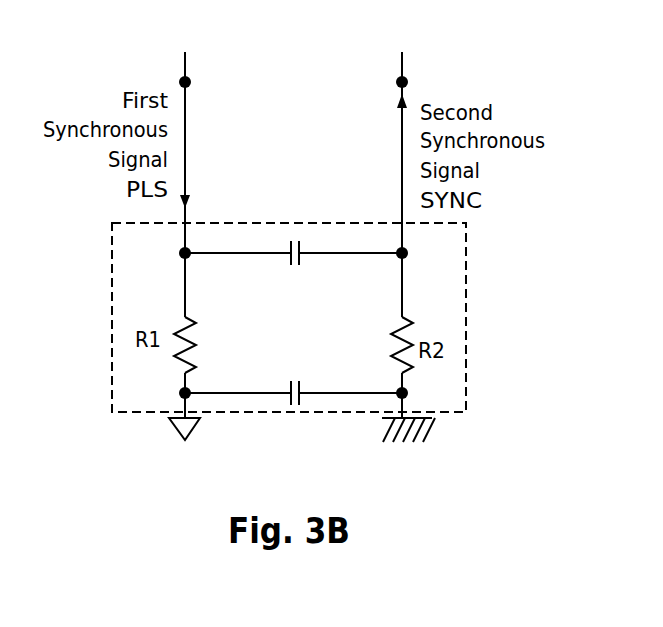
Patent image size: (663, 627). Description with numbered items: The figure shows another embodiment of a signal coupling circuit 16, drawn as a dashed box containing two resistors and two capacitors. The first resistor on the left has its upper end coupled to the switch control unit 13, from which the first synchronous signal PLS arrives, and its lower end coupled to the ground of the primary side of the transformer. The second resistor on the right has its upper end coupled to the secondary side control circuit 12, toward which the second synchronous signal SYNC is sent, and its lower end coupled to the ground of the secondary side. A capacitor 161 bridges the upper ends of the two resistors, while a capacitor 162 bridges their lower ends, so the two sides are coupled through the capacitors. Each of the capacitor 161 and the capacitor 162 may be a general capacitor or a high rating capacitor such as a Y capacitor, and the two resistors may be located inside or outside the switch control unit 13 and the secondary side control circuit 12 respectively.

The secondary side control circuit 12 is at (402, 125).
The switch control unit 13 is at (186, 125).
The signal coupling circuit 16 is at (454, 402).
The capacitor 161 is at (292, 267).
The capacitor 162 is at (293, 378).